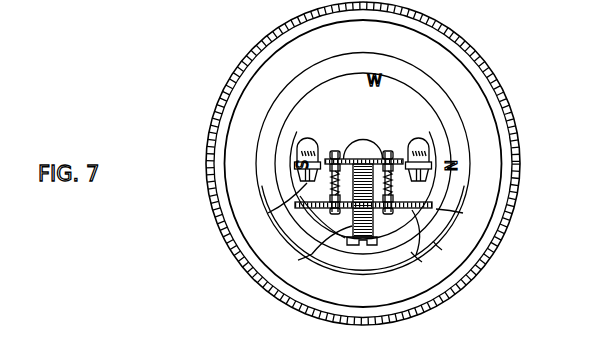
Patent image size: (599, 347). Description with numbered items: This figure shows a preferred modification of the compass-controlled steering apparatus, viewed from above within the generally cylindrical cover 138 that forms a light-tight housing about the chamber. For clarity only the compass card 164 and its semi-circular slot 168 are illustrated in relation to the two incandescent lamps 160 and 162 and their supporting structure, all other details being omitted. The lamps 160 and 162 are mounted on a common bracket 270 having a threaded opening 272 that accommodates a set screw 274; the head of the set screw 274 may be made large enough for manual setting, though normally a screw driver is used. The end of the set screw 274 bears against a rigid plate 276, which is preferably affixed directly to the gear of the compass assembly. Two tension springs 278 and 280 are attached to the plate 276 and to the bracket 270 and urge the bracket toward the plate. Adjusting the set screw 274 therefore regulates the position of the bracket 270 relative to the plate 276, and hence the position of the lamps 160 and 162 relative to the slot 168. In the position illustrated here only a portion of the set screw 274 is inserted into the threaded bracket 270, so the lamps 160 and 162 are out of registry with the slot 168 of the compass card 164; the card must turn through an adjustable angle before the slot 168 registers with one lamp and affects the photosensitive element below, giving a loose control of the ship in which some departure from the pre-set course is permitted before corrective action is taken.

The cover 138 is at (495, 83).
The compass card 164 is at (407, 83).
The incandescent lamp 160 is at (327, 124).
The incandescent lamp 162 is at (419, 124).
The rigid plate 276 is at (381, 147).
The tension spring 278 is at (272, 204).
The tension spring 280 is at (465, 215).
The set screw 274 is at (311, 249).
The threaded opening 272 is at (377, 267).
The bracket 270 is at (452, 250).
The semi-circular slot 168 is at (431, 264).